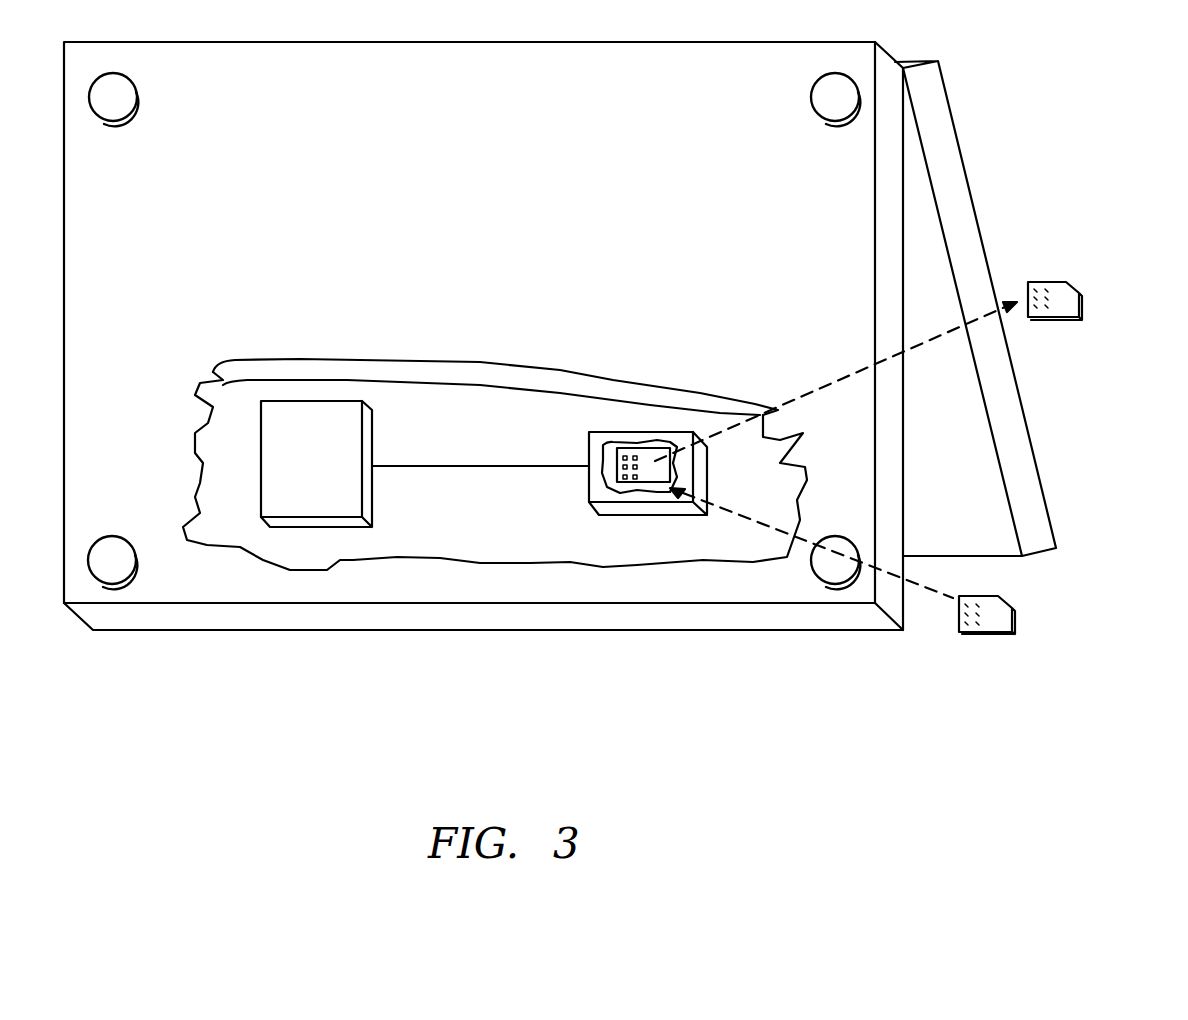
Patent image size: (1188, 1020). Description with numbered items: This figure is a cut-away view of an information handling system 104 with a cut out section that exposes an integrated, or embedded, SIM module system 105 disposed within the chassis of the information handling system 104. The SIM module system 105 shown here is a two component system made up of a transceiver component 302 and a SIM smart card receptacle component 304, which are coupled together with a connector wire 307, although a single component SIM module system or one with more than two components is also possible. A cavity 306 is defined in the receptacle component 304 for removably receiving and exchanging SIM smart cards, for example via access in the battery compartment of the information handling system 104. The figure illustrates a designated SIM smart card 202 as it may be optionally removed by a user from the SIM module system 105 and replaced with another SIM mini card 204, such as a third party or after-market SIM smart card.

The information handling system 104 is at (953, 115).
The SIM module system 105 is at (300, 420).
The SIM smart card 202 is at (1063, 292).
The SIM mini card 204 is at (998, 618).
The transceiver component 302 is at (304, 505).
The SIM smart card receptacle component 304 is at (648, 507).
The cavity 306 is at (648, 457).
The connector wire 307 is at (468, 467).